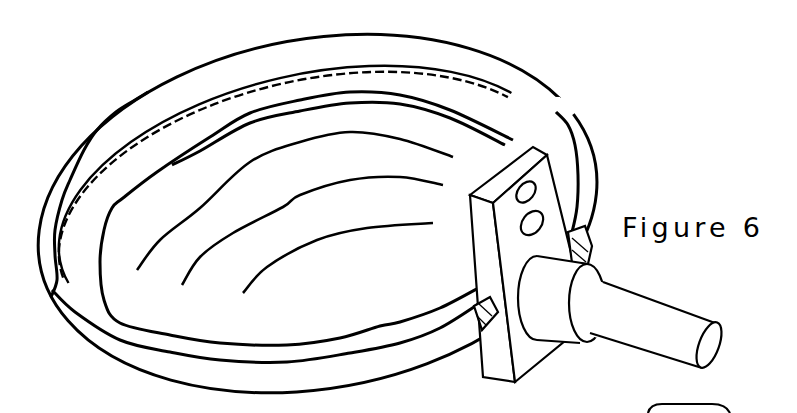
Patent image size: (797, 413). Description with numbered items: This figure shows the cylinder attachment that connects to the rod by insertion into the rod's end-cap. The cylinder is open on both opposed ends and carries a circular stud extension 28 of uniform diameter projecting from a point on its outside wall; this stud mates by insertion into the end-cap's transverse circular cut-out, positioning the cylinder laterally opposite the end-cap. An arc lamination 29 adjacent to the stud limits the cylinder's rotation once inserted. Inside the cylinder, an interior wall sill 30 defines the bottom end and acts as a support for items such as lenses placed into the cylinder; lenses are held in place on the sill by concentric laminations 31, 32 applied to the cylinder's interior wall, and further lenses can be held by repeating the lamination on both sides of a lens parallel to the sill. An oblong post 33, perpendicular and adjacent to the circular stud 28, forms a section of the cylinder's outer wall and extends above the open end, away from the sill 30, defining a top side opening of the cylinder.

The circular stud extension 28 is at (673, 300).
The arc lamination 29 is at (560, 342).
The interior wall sill 30 is at (193, 130).
The concentric lamination 31 is at (363, 130).
The concentric lamination 32 is at (102, 165).
The oblong post 33 is at (543, 202).